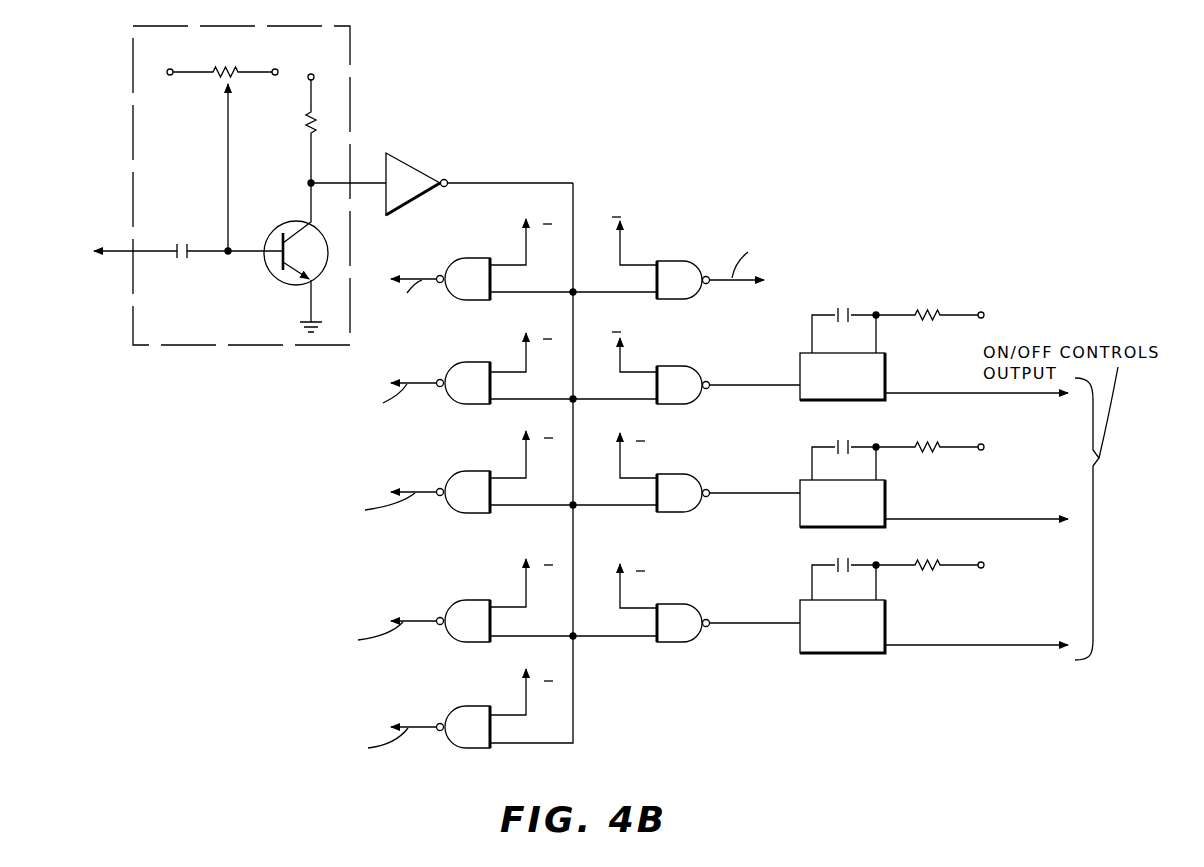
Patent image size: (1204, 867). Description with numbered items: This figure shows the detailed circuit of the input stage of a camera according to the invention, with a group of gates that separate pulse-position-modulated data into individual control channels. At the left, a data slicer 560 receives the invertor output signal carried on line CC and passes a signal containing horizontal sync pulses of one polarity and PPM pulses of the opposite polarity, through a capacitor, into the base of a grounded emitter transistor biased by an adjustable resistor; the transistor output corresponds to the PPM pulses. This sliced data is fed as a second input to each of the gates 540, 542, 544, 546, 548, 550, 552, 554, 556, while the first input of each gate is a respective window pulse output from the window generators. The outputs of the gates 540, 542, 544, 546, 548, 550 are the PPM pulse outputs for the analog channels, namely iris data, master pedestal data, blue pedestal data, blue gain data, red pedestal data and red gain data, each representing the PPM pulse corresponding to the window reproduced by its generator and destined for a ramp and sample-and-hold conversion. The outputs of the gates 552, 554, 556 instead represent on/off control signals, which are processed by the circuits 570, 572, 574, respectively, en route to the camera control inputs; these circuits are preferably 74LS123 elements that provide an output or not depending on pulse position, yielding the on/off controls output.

The data slicer 560 is at (350, 70).
The gate 540 is at (467, 250).
The gate 542 is at (465, 363).
The gate 544 is at (472, 472).
The gate 546 is at (462, 600).
The gate 548 is at (477, 707).
The gate 550 is at (668, 260).
The gate 552 is at (667, 365).
The gate 554 is at (680, 472).
The gate 556 is at (678, 602).
The circuit 570 is at (885, 363).
The circuit 572 is at (885, 500).
The circuit 574 is at (885, 623).